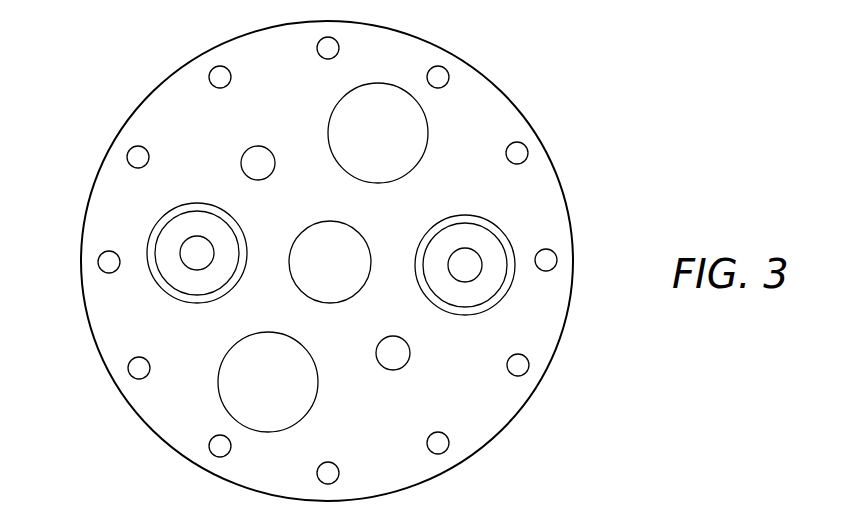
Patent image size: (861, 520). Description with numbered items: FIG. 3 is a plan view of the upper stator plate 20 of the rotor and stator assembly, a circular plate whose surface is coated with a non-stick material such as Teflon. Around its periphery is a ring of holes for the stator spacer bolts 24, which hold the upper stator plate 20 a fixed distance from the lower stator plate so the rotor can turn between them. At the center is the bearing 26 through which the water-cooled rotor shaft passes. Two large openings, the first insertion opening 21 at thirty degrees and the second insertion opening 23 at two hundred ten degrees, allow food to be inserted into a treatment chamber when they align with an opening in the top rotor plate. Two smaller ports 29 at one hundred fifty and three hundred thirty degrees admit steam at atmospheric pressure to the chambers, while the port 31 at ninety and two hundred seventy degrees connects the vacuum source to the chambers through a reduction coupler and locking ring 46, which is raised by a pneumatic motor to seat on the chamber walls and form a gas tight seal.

The upper stator plate 20 is at (137, 108).
The first insertion opening 21 is at (290, 389).
The second insertion opening 23 is at (402, 143).
The stator spacer bolts 24 is at (529, 364).
The bearing 26 is at (318, 225).
The ports 29 is at (244, 151).
The port 31 is at (196, 237).
The reduction coupler and locking ring 46 is at (152, 277).